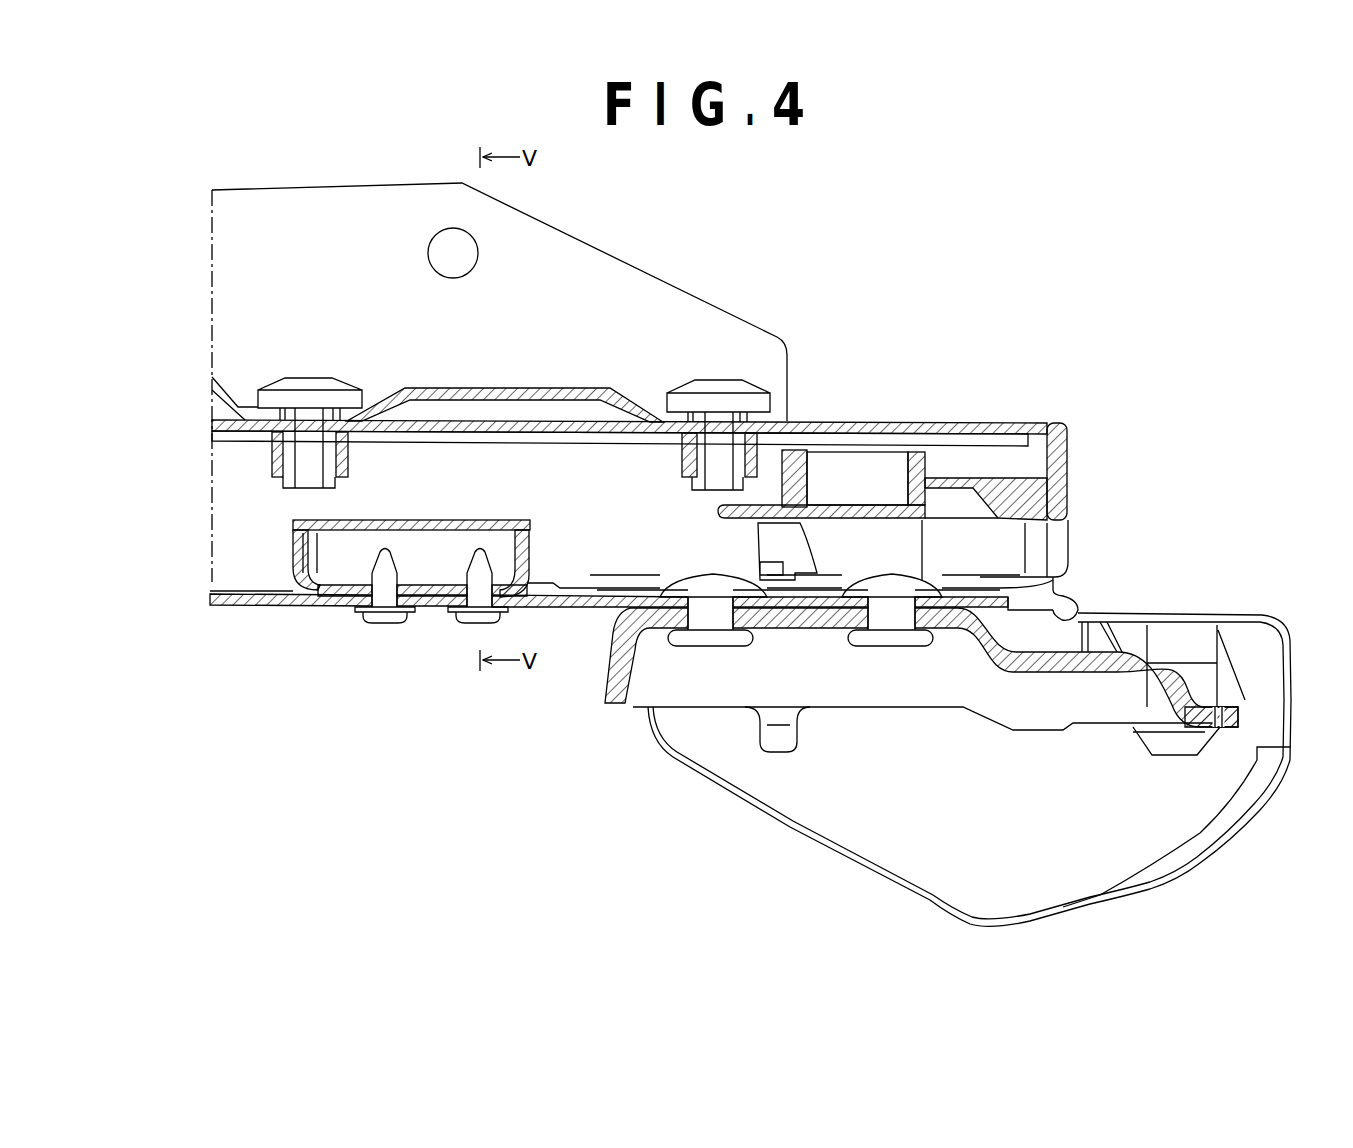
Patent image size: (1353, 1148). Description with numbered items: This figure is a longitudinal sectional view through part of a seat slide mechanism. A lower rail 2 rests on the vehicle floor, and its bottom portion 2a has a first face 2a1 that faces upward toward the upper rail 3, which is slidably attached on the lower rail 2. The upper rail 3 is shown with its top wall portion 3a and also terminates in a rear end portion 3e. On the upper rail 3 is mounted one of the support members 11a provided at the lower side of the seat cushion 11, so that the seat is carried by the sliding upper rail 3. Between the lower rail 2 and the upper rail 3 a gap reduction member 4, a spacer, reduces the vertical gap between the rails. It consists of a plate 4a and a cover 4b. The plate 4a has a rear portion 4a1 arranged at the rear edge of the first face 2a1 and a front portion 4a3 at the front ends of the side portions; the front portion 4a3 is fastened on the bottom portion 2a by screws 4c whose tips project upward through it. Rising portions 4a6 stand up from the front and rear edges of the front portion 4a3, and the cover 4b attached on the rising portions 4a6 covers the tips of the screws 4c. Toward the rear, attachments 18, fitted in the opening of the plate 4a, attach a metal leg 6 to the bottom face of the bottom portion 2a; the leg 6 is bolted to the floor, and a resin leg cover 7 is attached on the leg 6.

The support member 11a is at (638, 292).
The seat cushion 11 is at (499, 382).
The top wall portion 3a is at (824, 421).
The upper rail 3 is at (629, 398).
The base end wall 3e is at (1058, 490).
The gap reduction member 4 is at (416, 581).
The cover 4b is at (426, 524).
The rising portion 4a6 is at (300, 574).
The plate 4a is at (845, 562).
The rear portion 4a1 is at (988, 590).
The front portion 4a3 is at (333, 596).
The screw 4c is at (478, 624).
The bottom portion 2a is at (568, 632).
The lower rail 2 is at (568, 632).
The first face 2a1 is at (225, 592).
The leg 6 is at (900, 684).
The attachment 18 is at (885, 636).
The leg cover 7 is at (1165, 622).